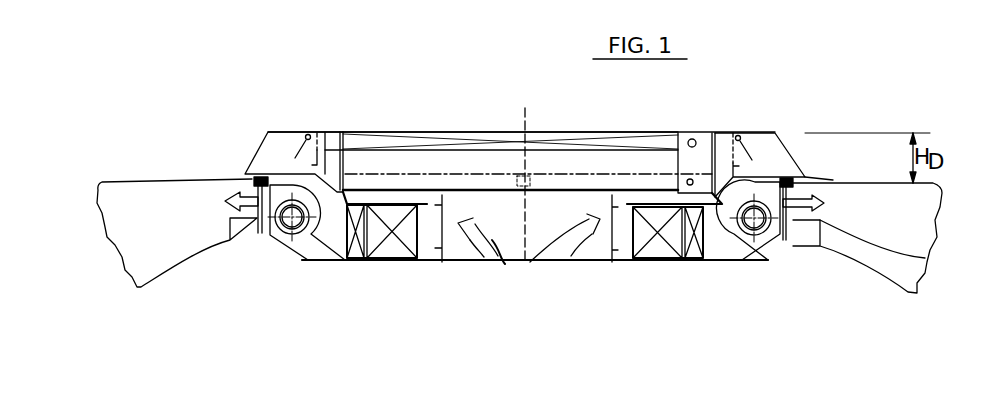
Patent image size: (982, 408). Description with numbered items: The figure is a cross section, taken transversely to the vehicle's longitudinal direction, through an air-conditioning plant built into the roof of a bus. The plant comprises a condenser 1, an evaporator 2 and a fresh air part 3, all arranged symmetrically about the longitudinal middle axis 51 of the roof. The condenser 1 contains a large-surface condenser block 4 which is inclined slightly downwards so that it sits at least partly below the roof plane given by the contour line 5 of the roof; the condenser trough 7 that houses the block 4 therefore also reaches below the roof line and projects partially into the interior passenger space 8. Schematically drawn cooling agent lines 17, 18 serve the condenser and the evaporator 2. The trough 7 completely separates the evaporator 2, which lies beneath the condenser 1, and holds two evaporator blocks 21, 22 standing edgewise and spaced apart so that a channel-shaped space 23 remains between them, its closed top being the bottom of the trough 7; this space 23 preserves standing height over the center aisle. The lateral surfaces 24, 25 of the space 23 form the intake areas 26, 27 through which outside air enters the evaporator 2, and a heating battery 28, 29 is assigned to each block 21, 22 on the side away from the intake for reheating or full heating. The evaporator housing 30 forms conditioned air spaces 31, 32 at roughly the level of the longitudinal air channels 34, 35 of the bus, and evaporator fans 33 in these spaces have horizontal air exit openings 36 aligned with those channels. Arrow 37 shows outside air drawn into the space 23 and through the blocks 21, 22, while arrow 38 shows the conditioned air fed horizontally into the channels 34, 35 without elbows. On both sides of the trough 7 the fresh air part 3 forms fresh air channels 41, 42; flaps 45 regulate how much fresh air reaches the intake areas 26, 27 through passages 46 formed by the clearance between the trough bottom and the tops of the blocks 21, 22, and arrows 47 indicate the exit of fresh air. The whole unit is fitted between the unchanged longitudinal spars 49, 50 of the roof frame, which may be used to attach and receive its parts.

The condenser 1 is at (402, 124).
The evaporator 2 is at (767, 258).
The fresh air part 3 is at (251, 138).
The condenser block 4 is at (482, 136).
The contour line of the roof 5 is at (143, 180).
The condenser trough 7 is at (577, 193).
The interior space 8 is at (246, 279).
The cooling agent line 17 is at (691, 139).
The cooling agent line 18 is at (692, 179).
The evaporator block 21 is at (398, 248).
The evaporator block 22 is at (660, 246).
The channel-shaped space 23 is at (533, 228).
The lateral surface 24 is at (463, 262).
The lateral surface 25 is at (592, 245).
The intake area 26 is at (440, 235).
The intake area 27 is at (622, 243).
The heating battery 28 is at (360, 258).
The heating battery 29 is at (693, 246).
The evaporator housing 30 is at (720, 262).
The conditioned air space 31 is at (328, 242).
The conditioned air space 32 is at (742, 258).
The evaporator fan 33 is at (300, 245).
The air channel 34 is at (172, 228).
The air channel 35 is at (902, 228).
The air exit opening 36 is at (258, 240).
The arrow 37 is at (505, 264).
The arrow 38 is at (230, 222).
The fresh air channel 41 is at (272, 155).
The fresh air channel 42 is at (772, 153).
The flap 45 is at (294, 160).
The passage 46 is at (377, 193).
The arrow 47 is at (813, 177).
The longitudinal spar 49 is at (250, 180).
The longitudinal spar 50 is at (877, 181).
The longitudinal middle axis 51 is at (528, 118).